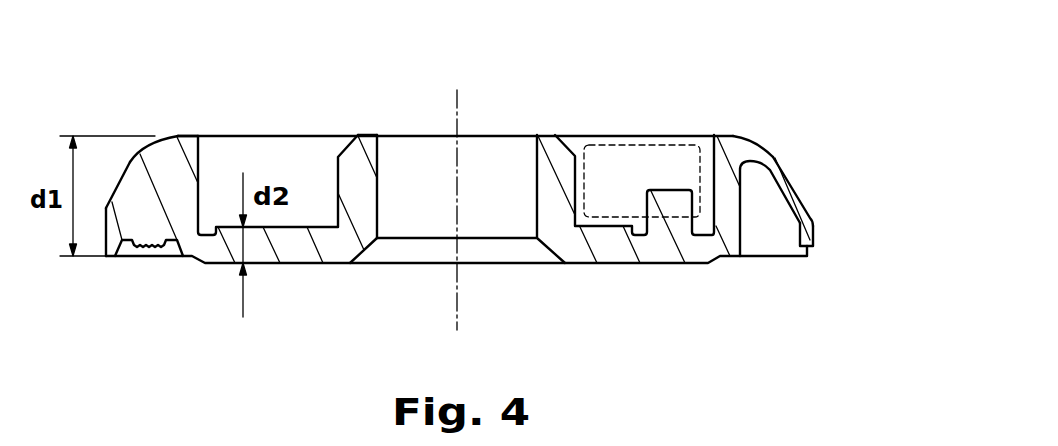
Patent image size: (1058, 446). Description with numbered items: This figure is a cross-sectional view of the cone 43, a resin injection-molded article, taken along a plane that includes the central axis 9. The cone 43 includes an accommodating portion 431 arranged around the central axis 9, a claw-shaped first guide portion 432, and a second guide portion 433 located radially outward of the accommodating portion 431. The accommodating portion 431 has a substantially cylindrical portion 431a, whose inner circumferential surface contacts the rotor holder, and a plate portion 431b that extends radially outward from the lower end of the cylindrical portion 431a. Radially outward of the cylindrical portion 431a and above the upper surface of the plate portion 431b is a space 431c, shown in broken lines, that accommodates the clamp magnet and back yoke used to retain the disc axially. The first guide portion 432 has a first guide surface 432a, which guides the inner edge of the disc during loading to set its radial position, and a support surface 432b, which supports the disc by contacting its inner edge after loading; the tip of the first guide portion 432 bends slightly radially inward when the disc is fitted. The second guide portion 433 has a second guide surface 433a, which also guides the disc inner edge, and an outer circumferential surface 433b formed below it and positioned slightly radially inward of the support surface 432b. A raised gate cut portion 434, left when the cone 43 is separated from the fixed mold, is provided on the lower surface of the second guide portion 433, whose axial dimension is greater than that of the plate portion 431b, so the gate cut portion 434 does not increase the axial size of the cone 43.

The cone 43 is at (83, 58).
The accommodating portion 431 is at (578, 119).
The cylindrical portion 431a is at (363, 196).
The plate portion 431b is at (302, 263).
The space 431c is at (668, 143).
The first guide portion 432 is at (780, 158).
The first guide surface 432a is at (813, 178).
The support surface 432b is at (826, 233).
The second guide portion 433 is at (200, 185).
The second guide surface 433a is at (115, 163).
The outer circumferential surface 433b is at (99, 238).
The gate cut portion 434 is at (147, 247).
The central axis 9 is at (457, 106).